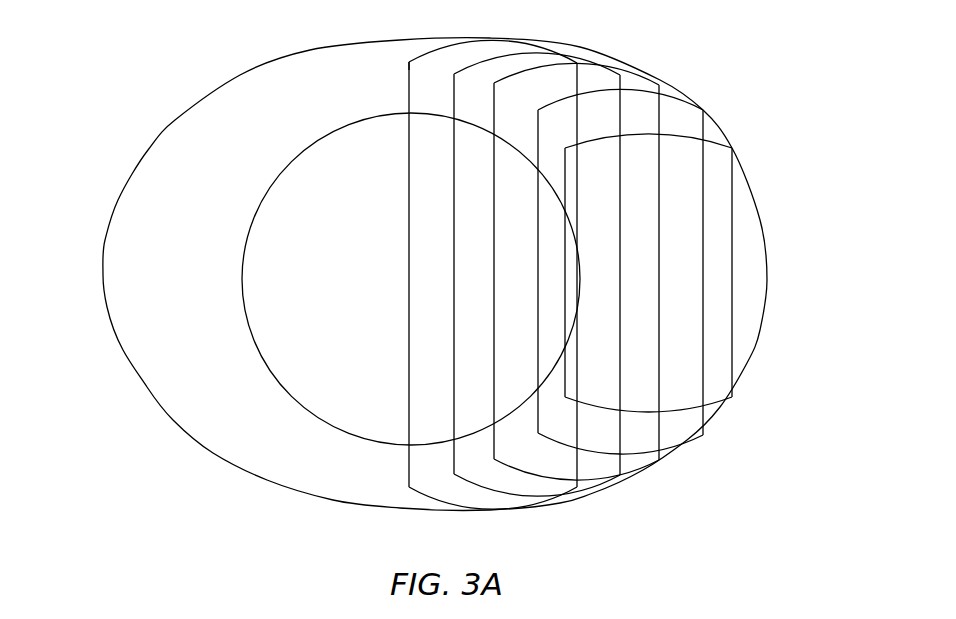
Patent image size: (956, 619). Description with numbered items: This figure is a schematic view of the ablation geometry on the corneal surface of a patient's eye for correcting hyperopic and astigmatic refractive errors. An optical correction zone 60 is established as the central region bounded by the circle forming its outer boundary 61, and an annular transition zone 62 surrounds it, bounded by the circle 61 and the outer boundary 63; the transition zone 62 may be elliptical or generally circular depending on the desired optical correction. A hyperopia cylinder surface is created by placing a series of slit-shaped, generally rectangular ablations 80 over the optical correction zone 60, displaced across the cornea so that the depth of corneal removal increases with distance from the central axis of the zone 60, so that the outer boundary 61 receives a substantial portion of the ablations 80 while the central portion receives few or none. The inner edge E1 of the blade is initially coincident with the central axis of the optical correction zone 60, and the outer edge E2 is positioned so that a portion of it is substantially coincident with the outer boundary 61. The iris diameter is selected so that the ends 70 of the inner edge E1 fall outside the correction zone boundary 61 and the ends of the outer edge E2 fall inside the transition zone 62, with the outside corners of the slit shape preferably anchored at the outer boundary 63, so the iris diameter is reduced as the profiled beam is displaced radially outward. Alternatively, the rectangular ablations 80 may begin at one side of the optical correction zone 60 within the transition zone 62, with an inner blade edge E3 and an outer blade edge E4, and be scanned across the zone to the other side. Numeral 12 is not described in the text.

The probe body 12 is at (732, 148).
The optical correction zone 60 is at (350, 373).
The outer boundary of the optical correction zone 61 is at (243, 280).
The annular transition zone 62 is at (163, 338).
The outer boundary of the transition zone 63 is at (102, 280).
The ends of the inner edge 70 is at (409, 62).
The rectangular ablations 80 is at (715, 282).
The inner edge of blade E1 is at (409, 437).
The outer edge of blade E2 is at (582, 473).
The inner blade edge E3 is at (565, 173).
The outer blade edge E4 is at (732, 193).